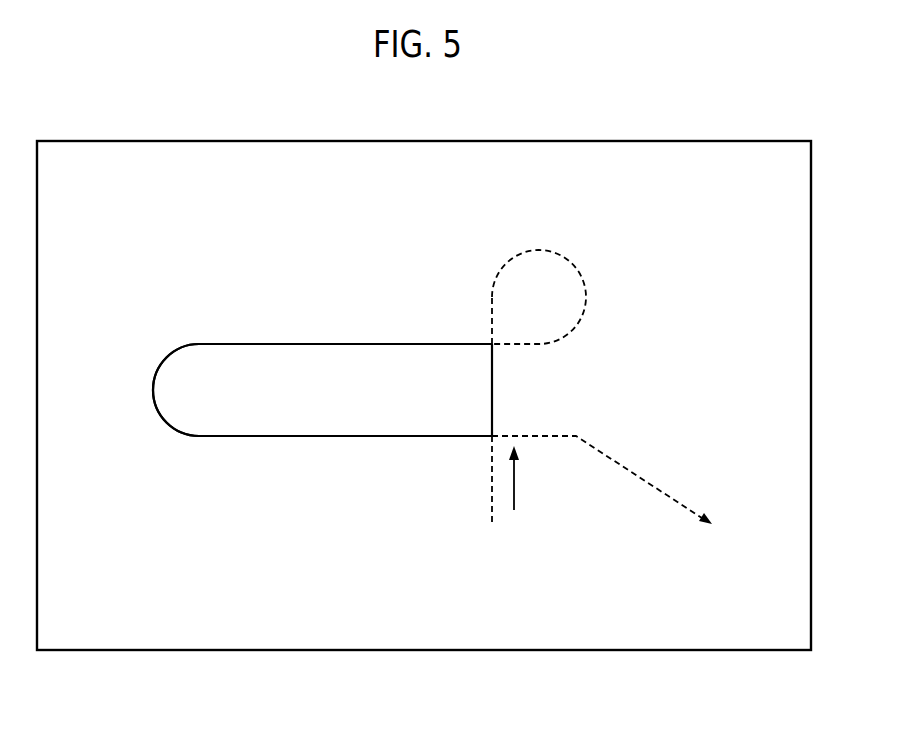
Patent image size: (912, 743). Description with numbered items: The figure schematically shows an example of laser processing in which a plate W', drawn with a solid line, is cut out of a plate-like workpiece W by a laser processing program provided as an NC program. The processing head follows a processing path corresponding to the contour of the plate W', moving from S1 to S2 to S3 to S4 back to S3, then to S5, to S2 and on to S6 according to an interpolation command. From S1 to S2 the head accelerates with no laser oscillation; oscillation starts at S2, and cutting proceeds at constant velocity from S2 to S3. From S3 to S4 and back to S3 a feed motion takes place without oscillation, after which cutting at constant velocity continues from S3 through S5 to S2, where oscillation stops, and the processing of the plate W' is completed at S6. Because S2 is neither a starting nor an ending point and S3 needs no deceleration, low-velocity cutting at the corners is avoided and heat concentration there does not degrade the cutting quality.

The plate-like workpiece W is at (424, 361).
The plate W' is at (322, 340).
The processing path point S1 is at (499, 493).
The processing path point S2 is at (474, 391).
The processing path point S3 is at (475, 322).
The processing path point S4 is at (554, 297).
The processing path point S5 is at (158, 390).
The processing path point S6 is at (602, 465).